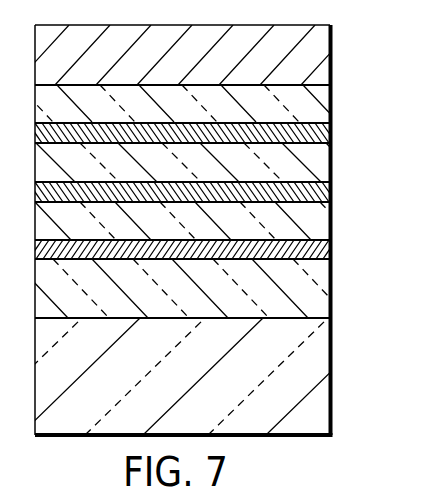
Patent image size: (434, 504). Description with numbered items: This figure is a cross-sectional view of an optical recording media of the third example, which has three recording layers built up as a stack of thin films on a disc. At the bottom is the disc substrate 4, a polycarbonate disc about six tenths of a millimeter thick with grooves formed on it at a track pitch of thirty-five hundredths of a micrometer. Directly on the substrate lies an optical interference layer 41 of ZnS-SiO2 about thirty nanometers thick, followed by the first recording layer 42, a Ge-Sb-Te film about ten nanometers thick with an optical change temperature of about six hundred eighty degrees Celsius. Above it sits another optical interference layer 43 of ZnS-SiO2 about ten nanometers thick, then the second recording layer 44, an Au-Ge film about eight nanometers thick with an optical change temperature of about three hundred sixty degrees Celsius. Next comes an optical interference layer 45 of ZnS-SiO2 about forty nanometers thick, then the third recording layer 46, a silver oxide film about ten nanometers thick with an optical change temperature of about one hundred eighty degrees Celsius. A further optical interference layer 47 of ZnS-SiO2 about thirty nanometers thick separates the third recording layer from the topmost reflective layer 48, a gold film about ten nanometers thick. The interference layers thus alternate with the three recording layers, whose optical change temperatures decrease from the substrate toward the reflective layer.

The disc substrate 4 is at (332, 373).
The optical interference layer 41 is at (332, 288).
The first recording layer 42 is at (332, 250).
The optical interference layer 43 is at (332, 223).
The second recording layer 44 is at (332, 192).
The optical interference layer 45 is at (332, 163).
The third recording layer 46 is at (332, 133).
The optical interference layer 47 is at (332, 105).
The reflective layer 48 is at (332, 55).